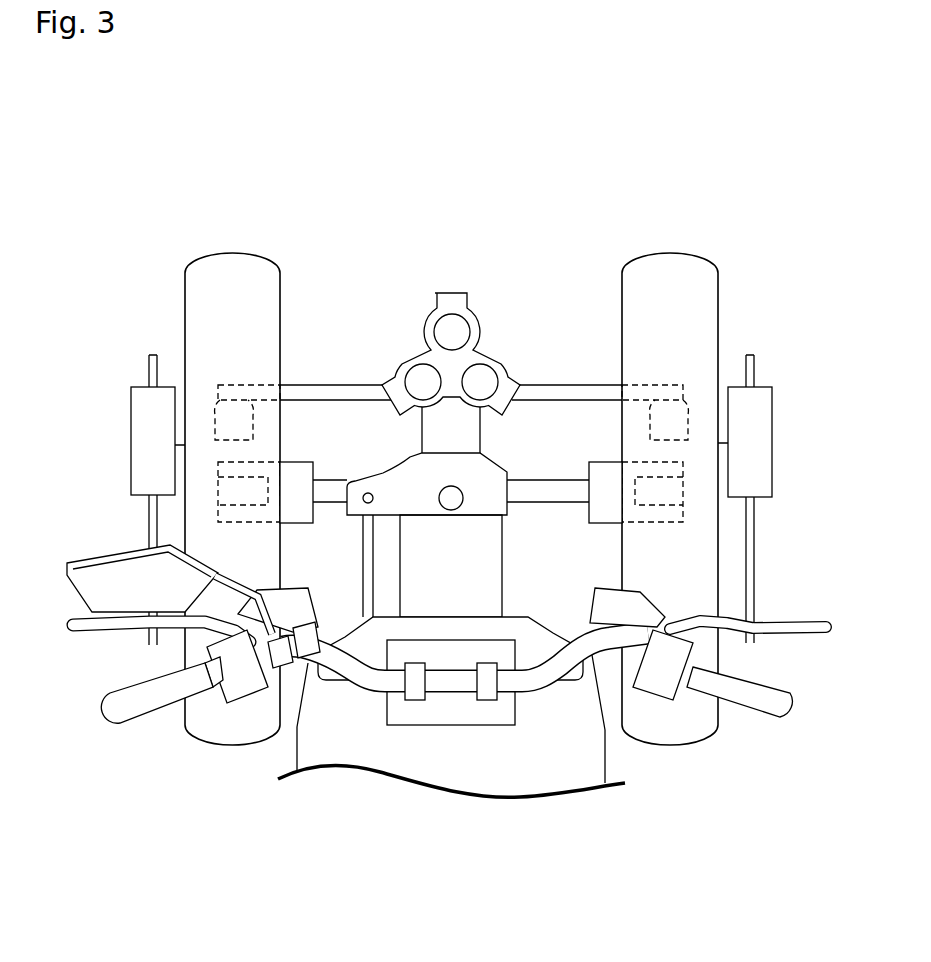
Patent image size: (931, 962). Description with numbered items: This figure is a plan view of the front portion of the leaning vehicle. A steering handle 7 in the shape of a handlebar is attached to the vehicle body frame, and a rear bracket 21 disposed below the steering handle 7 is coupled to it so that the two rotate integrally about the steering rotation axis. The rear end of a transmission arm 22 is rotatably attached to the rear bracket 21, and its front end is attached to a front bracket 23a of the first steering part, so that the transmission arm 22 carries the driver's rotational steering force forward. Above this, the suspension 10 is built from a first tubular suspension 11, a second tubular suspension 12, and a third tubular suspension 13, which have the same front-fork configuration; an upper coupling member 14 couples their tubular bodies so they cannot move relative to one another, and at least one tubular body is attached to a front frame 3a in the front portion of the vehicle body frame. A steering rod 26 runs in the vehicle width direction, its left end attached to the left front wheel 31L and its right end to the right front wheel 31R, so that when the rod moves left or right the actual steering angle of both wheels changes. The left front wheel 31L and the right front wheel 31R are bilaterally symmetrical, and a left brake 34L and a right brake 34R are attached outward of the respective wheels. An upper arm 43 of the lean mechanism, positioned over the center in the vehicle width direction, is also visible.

The front frame 3a is at (490, 557).
The steering handle 7 is at (423, 765).
The suspension 10 is at (451, 289).
The first tubular suspension 11 is at (440, 330).
The second tubular suspension 12 is at (413, 377).
The third tubular suspension 13 is at (487, 377).
The upper coupling member 14 is at (507, 383).
The rear bracket 21 is at (360, 635).
The transmission arm 22 is at (363, 535).
The front bracket 23a is at (410, 460).
The steering rod 26 is at (316, 392).
The left front wheel 31L is at (237, 247).
The right front wheel 31R is at (665, 247).
The left brake 34L is at (127, 368).
The right brake 34R is at (773, 369).
The upper arm 43 is at (542, 485).